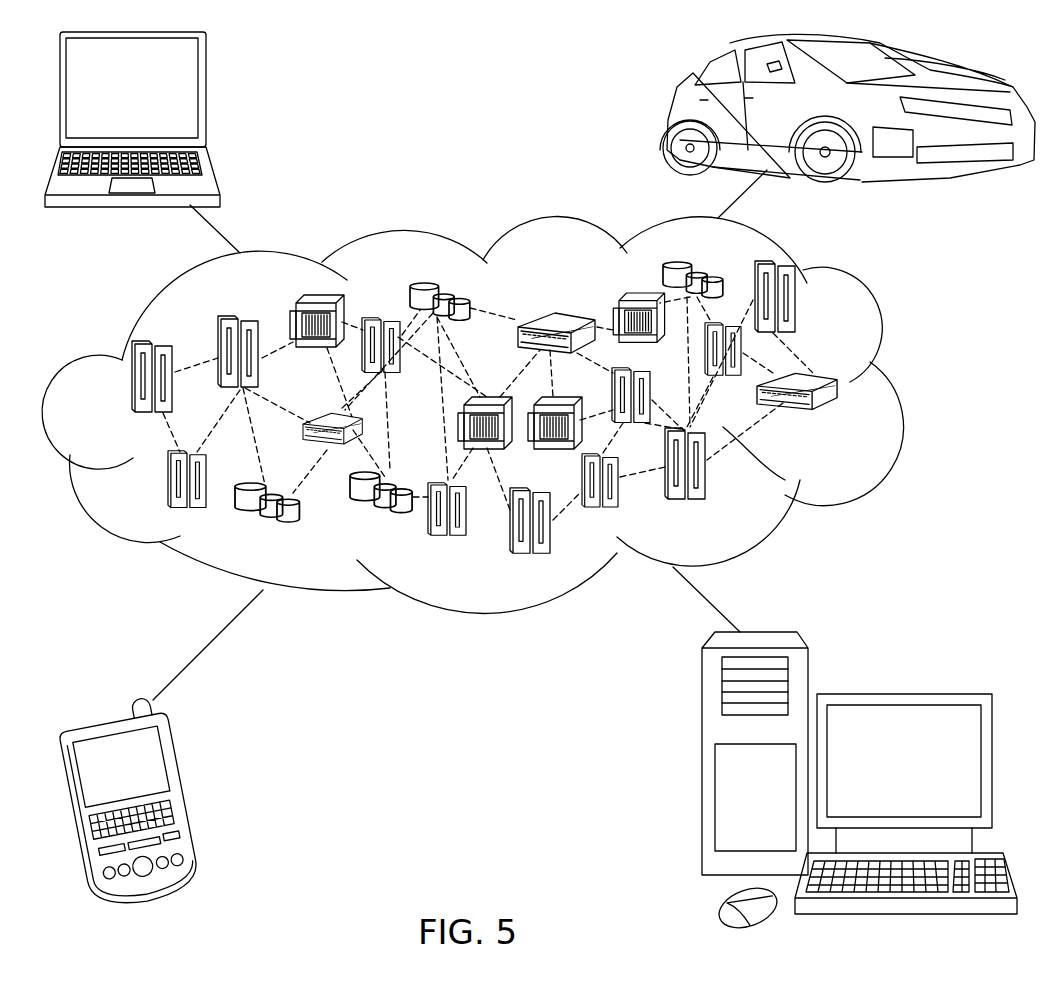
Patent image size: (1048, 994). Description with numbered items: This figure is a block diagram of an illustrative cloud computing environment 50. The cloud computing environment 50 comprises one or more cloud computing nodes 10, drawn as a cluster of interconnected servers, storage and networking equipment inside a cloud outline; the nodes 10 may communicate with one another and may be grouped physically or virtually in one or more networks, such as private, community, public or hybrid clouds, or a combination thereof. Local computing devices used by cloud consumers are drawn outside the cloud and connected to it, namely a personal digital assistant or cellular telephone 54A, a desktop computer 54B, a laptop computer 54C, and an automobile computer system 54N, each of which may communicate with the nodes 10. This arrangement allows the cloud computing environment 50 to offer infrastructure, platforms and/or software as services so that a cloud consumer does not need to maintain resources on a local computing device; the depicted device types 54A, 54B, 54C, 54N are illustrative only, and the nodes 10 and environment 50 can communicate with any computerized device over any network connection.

The cloud computing node 10 is at (862, 427).
The cloud computing environment 50 is at (502, 435).
The personal digital assistant or cellular telephone 54A is at (192, 793).
The desktop computer 54B is at (898, 694).
The laptop computer 54C is at (205, 96).
The automobile computer system 54N is at (672, 116).